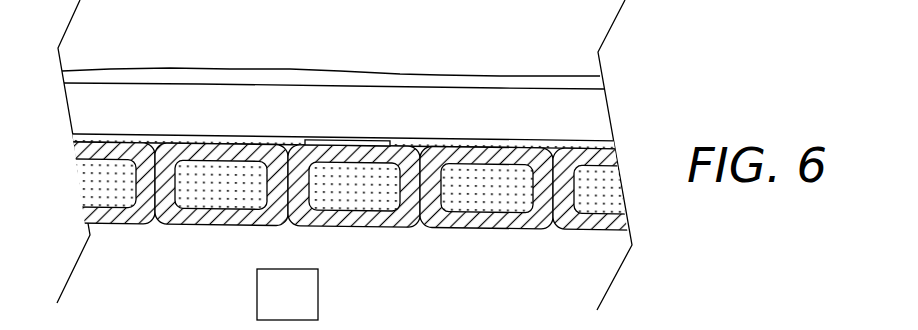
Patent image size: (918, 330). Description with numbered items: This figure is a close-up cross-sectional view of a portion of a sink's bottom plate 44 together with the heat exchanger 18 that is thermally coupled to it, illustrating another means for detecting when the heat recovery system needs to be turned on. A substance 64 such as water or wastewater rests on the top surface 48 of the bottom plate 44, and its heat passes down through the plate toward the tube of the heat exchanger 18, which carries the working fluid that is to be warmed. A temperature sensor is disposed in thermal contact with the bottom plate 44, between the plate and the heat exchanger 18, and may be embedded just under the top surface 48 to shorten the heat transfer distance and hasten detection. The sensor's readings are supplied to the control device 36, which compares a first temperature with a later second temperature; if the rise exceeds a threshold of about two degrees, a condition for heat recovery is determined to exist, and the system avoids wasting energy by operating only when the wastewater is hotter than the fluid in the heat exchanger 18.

The heat exchanger or tube 18 is at (354, 209).
The control device 36 is at (287, 222).
The bottom plate 44 is at (162, 108).
The top surface of bottom plate 48 is at (238, 82).
The substance, e.g., water, wastewater, etc. 64 is at (108, 68).